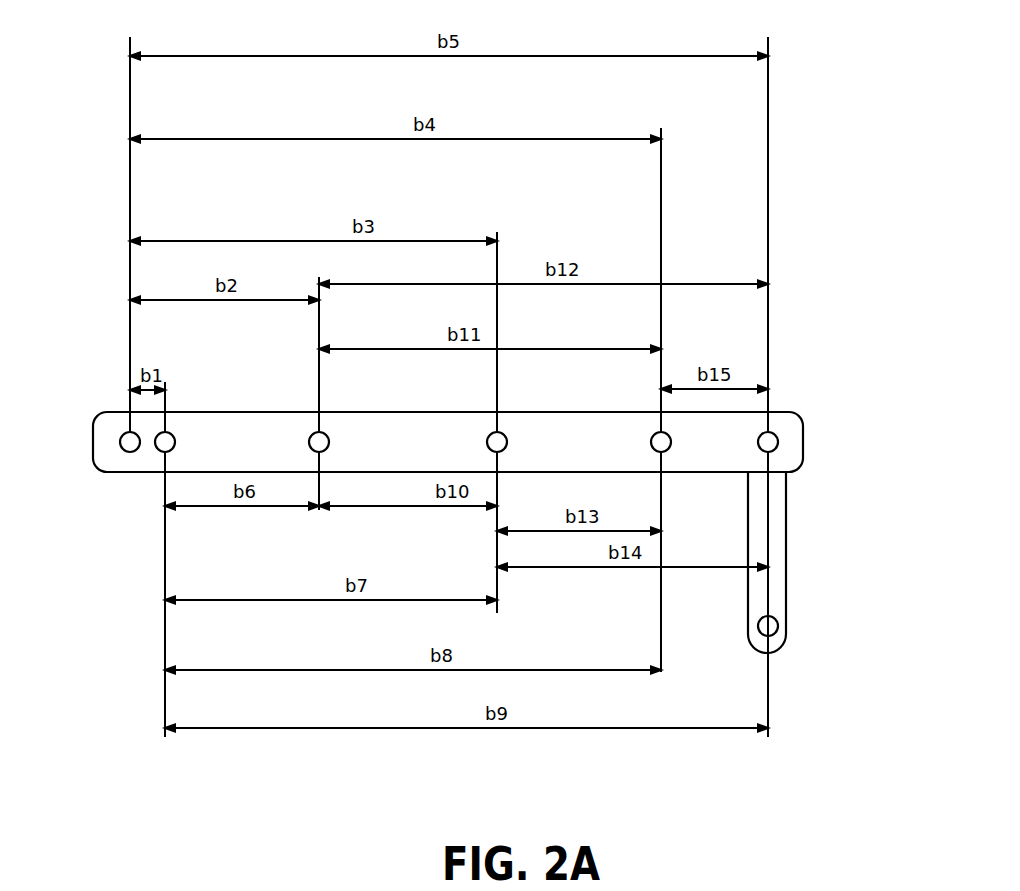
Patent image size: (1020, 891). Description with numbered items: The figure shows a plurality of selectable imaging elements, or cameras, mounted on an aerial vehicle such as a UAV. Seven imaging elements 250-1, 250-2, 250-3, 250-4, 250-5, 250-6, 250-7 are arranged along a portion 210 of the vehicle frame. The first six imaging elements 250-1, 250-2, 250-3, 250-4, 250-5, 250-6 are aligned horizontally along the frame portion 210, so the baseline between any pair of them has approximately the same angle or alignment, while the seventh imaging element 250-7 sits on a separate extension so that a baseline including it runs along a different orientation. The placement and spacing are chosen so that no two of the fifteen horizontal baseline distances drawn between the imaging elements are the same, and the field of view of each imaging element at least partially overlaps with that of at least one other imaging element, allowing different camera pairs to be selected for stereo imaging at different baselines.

The frame portion 210 is at (793, 412).
The imaging element 250-1 is at (122, 452).
The imaging element 250-2 is at (175, 442).
The imaging element 250-3 is at (329, 442).
The imaging element 250-4 is at (507, 442).
The imaging element 250-5 is at (671, 442).
The imaging element 250-6 is at (778, 442).
The imaging element 250-7 is at (778, 626).